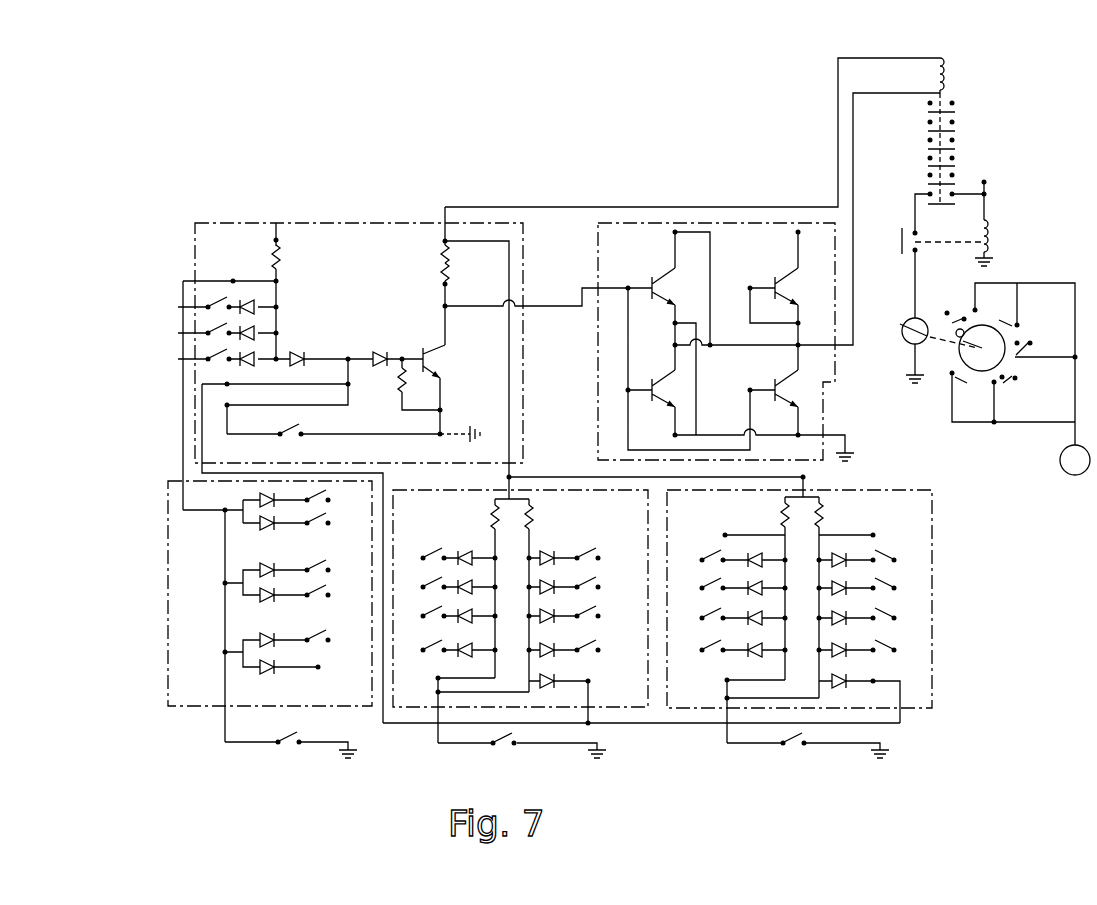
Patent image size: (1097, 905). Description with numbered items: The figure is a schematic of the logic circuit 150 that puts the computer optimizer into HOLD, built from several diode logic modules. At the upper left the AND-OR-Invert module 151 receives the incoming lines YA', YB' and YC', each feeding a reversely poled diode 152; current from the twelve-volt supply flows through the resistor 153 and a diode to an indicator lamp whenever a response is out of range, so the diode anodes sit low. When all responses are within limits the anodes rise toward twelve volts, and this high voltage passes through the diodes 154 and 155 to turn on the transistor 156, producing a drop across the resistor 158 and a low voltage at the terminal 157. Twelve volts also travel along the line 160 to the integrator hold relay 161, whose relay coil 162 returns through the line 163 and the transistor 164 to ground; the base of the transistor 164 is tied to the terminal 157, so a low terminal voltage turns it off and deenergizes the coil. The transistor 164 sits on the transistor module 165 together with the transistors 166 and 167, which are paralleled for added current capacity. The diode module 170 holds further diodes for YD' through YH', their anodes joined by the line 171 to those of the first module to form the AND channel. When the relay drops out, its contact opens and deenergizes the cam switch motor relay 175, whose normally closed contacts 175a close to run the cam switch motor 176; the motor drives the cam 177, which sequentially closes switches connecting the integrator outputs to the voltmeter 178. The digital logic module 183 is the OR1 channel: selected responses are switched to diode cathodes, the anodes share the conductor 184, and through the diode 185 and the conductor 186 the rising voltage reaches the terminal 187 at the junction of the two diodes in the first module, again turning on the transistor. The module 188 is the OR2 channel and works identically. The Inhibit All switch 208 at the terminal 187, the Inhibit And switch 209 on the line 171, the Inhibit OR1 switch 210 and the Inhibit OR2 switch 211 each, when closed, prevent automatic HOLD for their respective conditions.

The logic circuit 150 is at (590, 147).
The AND-OR-Invert module 151 is at (525, 282).
The reversely poled diode 152 is at (262, 362).
The resistor 153 is at (283, 262).
The diode 154 is at (298, 354).
The diode 155 is at (365, 356).
The transistor 156 is at (422, 347).
The terminal 157 is at (440, 280).
The resistor 158 is at (441, 258).
The line 160 is at (608, 207).
The integrator hold relay 161 is at (912, 124).
The relay coil 162 is at (935, 80).
The line 163 is at (855, 348).
The transistor 164 is at (652, 382).
The transistor module 165 is at (742, 337).
The transistor 166 is at (652, 278).
The transistor 167 is at (775, 385).
The diode module 170 is at (166, 633).
The line 171 is at (192, 466).
The cam switch motor relay 175 is at (990, 238).
The normally closed contacts 175a is at (902, 246).
The cam switch motor 176 is at (906, 322).
The cam 177 is at (960, 350).
The voltmeter 178 is at (1060, 465).
The digital logic module 183 is at (625, 710).
The conductor 184 is at (487, 692).
The diode 185 is at (547, 675).
The conductor 186 is at (432, 728).
The terminal 187 is at (348, 352).
The module 188 is at (872, 490).
The Inhibit All switch 208 is at (290, 433).
The Inhibit And switch 209 is at (290, 738).
The Inhibit OR1 switch 210 is at (503, 746).
The Inhibit OR2 switch 211 is at (795, 748).